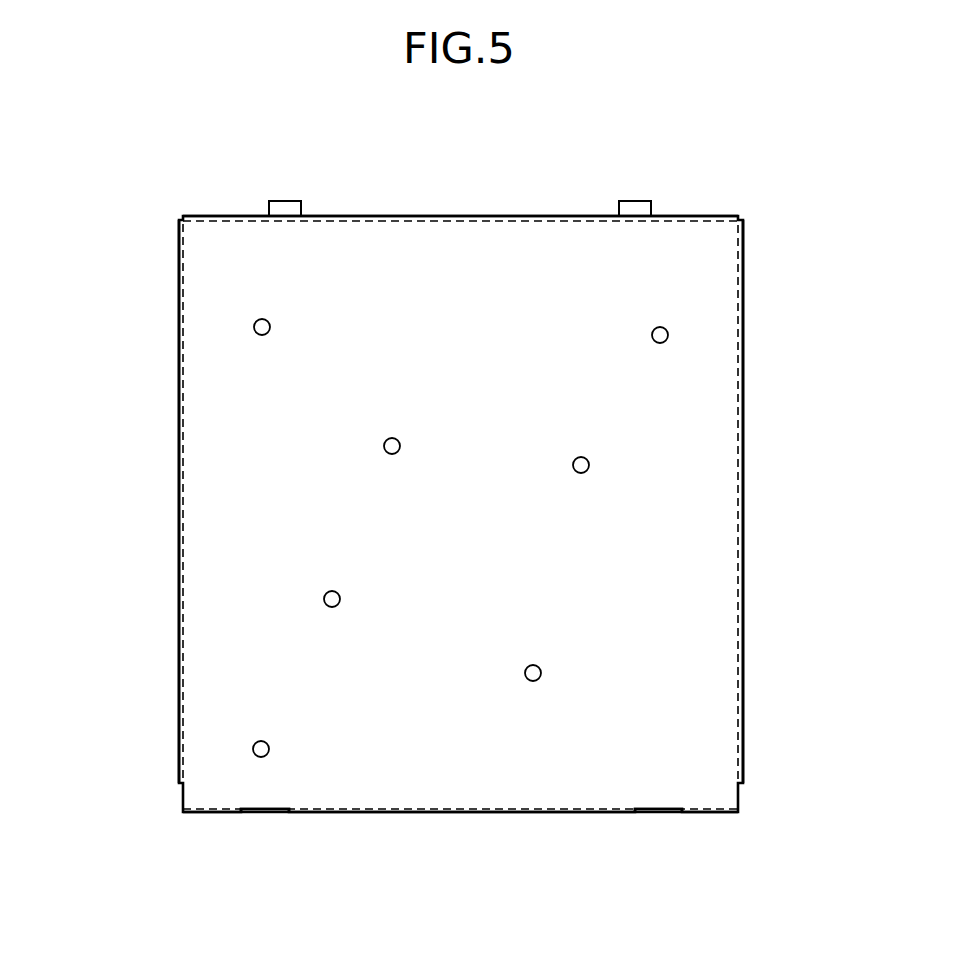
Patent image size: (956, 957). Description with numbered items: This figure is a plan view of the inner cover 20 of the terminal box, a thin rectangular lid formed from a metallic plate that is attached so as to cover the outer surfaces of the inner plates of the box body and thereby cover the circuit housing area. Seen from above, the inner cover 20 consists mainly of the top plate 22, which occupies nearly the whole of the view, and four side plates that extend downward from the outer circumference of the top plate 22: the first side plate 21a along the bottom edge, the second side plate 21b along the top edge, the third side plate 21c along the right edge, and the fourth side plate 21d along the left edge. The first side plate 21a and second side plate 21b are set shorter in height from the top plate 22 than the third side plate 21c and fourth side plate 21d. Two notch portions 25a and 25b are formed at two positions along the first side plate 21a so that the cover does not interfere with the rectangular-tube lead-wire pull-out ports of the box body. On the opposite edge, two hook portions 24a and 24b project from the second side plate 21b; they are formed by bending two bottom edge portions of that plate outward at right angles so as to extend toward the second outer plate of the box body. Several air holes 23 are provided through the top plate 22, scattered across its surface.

The inner cover 20 is at (702, 214).
The first side plate 21a is at (394, 815).
The second side plate 21b is at (389, 216).
The third side plate 21c is at (743, 503).
The fourth side plate 21d is at (179, 533).
The top plate 22 is at (678, 397).
The air holes 23 is at (254, 327).
The hook portion 24a is at (283, 210).
The hook portion 24b is at (634, 208).
The notch portion 25a is at (262, 813).
The notch portion 25b is at (658, 814).